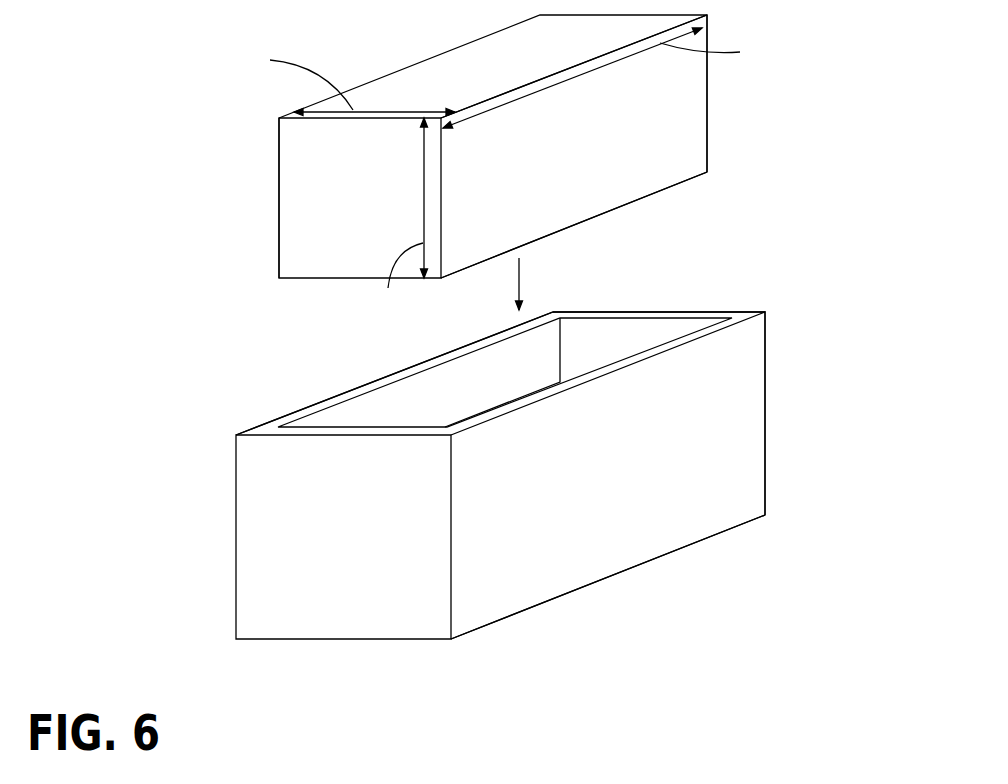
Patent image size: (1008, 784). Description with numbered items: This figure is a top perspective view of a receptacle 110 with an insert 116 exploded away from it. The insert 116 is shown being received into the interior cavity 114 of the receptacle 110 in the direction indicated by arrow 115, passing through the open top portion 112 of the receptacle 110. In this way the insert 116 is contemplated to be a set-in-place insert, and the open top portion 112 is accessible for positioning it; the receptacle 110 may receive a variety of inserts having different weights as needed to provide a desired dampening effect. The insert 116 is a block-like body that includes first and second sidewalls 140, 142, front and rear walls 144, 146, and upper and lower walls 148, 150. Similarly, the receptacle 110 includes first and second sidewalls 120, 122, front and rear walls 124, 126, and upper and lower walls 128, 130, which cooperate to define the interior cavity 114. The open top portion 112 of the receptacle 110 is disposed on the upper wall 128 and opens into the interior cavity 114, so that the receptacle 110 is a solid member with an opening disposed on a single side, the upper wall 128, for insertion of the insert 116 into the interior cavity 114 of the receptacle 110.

The receptacle 110 is at (524, 446).
The open top portion 112 is at (325, 398).
The interior cavity 114 is at (610, 348).
The arrow 115 is at (519, 272).
The insert 116 is at (515, 161).
The first sidewall 120 is at (292, 528).
The second sidewall 122 is at (708, 315).
The front wall 124 is at (388, 402).
The rear wall 126 is at (643, 547).
The upper wall 128 is at (272, 425).
The lower wall 130 is at (505, 618).
The first sidewall 140 is at (325, 195).
The second sidewall 142 is at (707, 84).
The front wall 144 is at (279, 145).
The rear wall 146 is at (673, 143).
The upper wall 148 is at (405, 97).
The lower wall 150 is at (645, 197).